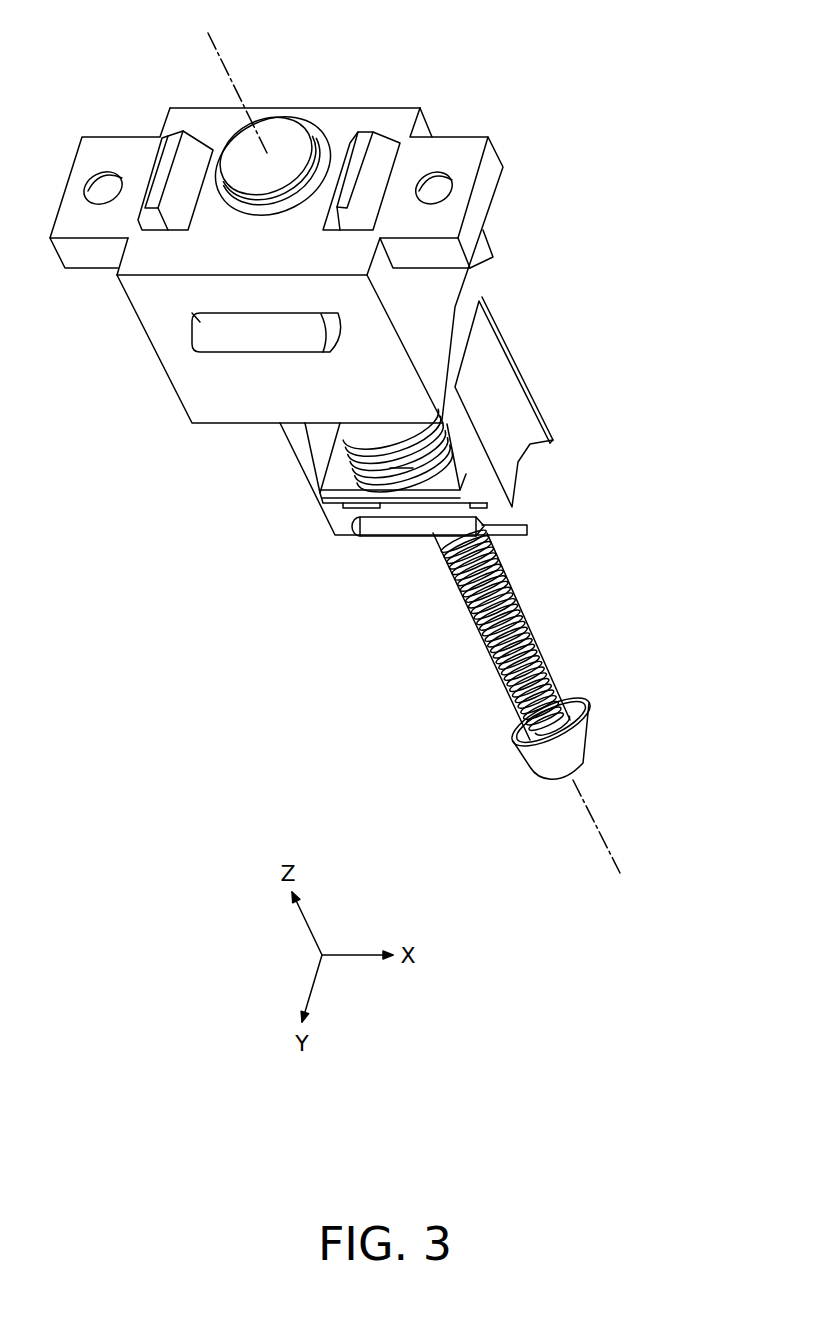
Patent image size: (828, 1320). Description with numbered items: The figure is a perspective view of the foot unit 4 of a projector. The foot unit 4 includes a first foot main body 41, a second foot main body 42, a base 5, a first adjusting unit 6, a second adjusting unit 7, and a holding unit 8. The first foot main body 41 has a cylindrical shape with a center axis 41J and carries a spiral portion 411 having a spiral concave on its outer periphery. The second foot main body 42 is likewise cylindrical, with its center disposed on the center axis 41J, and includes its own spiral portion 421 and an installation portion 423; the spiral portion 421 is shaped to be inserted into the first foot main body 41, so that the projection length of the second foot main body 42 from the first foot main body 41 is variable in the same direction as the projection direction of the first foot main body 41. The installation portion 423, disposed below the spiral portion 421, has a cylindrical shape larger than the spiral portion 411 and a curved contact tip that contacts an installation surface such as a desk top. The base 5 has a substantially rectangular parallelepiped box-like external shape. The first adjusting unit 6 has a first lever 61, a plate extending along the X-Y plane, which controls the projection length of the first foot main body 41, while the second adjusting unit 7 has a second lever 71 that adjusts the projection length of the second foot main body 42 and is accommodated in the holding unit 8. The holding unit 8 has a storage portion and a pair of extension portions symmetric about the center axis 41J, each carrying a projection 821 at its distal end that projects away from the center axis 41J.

The foot unit 4 is at (438, 47).
The base 5 is at (485, 268).
The first adjusting unit 6 is at (280, 349).
The first lever 61 is at (243, 343).
The second adjusting unit 7 is at (403, 513).
The second lever 71 is at (386, 513).
The holding unit 8 is at (517, 460).
The first foot main body 41 is at (284, 130).
The spiral portion 411 is at (350, 445).
The center axis 41J is at (606, 840).
The second foot main body 42 is at (553, 653).
The spiral portion 421 is at (536, 633).
The installation portion 423 is at (594, 742).
The projection 821 is at (177, 138).